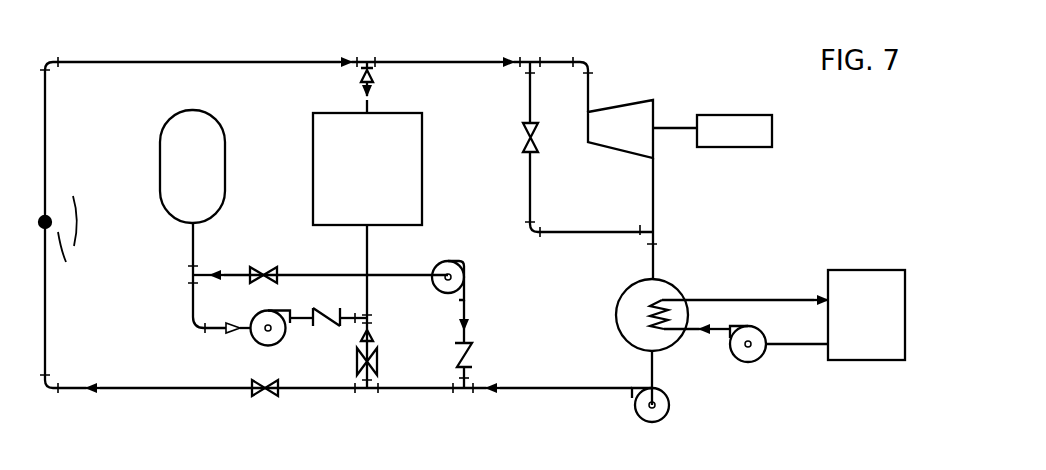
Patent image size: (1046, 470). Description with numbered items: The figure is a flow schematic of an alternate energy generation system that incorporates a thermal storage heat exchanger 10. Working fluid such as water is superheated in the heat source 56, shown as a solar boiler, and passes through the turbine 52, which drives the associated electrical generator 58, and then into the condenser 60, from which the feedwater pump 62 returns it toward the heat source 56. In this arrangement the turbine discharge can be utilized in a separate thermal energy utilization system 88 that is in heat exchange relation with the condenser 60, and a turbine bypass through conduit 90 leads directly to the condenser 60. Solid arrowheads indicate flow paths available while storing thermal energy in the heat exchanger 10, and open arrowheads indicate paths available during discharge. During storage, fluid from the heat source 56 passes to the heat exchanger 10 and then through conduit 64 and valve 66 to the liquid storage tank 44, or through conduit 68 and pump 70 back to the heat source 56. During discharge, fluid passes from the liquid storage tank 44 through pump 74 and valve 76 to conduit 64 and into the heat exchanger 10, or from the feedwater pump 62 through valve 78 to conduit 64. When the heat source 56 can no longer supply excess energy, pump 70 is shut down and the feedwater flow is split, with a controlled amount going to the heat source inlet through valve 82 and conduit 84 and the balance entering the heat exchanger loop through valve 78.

The thermal storage heat exchanger 10 is at (422, 142).
The liquid storage tank 44 is at (226, 150).
The turbine 52 is at (628, 102).
The heat source 56 is at (316, 225).
The electrical generator 58 is at (736, 115).
The condenser 60 is at (617, 310).
The feedwater pump 62 is at (670, 394).
The conduit 64 is at (367, 243).
The valve 66 is at (264, 268).
The conduit 68 is at (390, 275).
The pump 70 is at (462, 267).
The pump 74 is at (284, 340).
The valve 76 is at (321, 322).
The valve 78 is at (378, 364).
The valve 82 is at (264, 394).
The conduit 84 is at (196, 386).
The thermal energy utilization system 88 is at (803, 337).
The conduit 90 is at (530, 96).